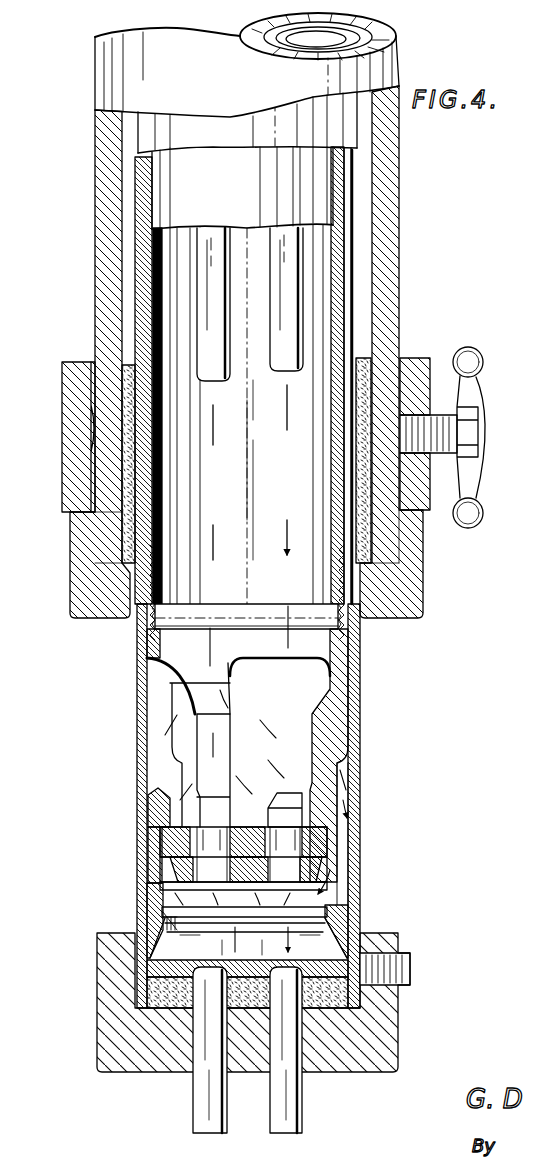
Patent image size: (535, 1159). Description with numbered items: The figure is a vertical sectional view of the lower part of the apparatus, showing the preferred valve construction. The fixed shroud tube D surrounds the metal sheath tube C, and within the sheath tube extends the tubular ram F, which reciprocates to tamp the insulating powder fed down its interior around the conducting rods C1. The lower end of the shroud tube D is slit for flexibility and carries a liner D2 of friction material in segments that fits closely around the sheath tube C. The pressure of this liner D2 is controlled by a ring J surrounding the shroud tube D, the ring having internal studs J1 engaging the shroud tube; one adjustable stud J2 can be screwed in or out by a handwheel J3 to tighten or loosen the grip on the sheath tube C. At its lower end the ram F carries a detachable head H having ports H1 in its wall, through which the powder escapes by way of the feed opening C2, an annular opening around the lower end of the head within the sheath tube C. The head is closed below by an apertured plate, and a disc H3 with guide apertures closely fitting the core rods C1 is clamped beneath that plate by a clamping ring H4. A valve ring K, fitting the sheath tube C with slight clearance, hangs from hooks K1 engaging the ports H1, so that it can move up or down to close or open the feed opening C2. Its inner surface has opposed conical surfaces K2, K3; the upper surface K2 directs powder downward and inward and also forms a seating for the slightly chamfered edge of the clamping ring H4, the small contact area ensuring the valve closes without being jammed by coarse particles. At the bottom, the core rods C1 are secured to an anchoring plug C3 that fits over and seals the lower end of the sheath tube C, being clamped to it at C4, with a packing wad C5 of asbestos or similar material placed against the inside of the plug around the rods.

The shroud tube D is at (387, 155).
The tubular ram F is at (338, 290).
The ring J is at (76, 447).
The internal studs J1 is at (90, 412).
The adjustable stud J2 is at (460, 468).
The handwheel J3 is at (468, 349).
The liner D2 is at (127, 486).
The metal tube C is at (140, 640).
The head H is at (333, 728).
The ports H1 is at (162, 678).
The hooks K1 is at (148, 807).
The disc H3 is at (340, 868).
The clamping ring H4 is at (168, 880).
The feed opening C2 is at (350, 863).
The upper conical surface K2 is at (328, 910).
The valve ring K is at (338, 930).
The lower conical surface K3 is at (375, 948).
The clamping point C4 is at (399, 985).
The packing wad C5 is at (157, 990).
The anchoring plug C3 is at (115, 1055).
The conducting rods C1 is at (273, 1125).